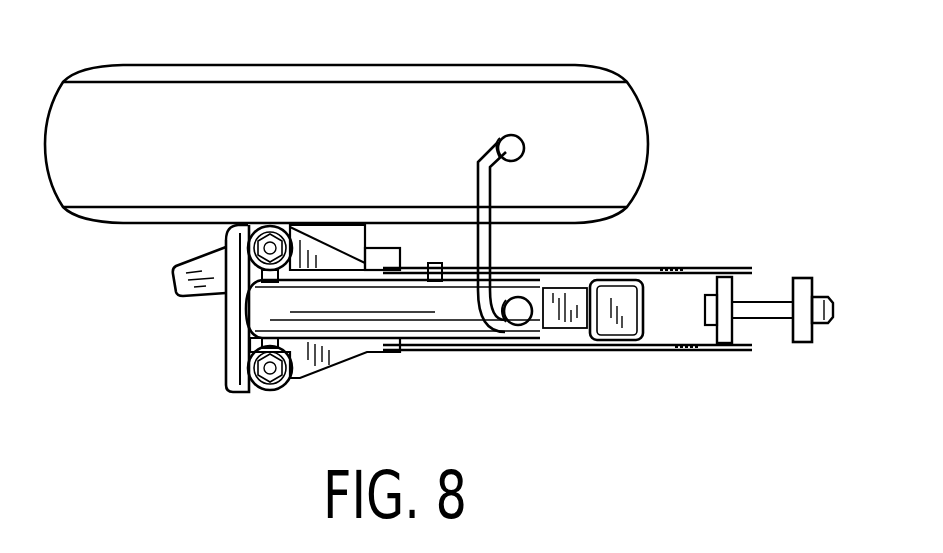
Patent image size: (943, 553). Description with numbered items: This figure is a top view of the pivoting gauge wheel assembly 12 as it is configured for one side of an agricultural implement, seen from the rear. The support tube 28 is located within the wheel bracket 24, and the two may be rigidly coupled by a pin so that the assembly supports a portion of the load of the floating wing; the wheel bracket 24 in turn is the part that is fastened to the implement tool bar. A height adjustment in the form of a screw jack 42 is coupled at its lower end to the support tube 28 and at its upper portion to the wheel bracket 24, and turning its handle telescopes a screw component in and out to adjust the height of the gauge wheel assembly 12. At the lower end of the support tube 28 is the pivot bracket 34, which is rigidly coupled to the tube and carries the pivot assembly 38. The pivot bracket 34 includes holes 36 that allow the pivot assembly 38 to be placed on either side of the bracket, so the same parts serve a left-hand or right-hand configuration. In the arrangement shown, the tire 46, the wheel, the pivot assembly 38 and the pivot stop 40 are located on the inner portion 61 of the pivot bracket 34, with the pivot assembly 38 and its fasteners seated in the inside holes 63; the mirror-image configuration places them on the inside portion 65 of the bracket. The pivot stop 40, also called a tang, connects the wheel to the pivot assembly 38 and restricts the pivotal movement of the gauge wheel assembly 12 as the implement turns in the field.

The gauge wheel assembly 12 is at (718, 193).
The wheel bracket 24 is at (613, 352).
The support tube 28 is at (543, 328).
The pivot bracket 34 is at (300, 378).
The holes 36 is at (258, 392).
The pivot assembly 38 is at (283, 240).
The pivot stop 40 is at (187, 298).
The screw jack 42 is at (470, 310).
The tire 46 is at (241, 88).
The inside portion 61 is at (173, 247).
The inside holes 63 is at (218, 233).
The inside portion 65 is at (203, 369).